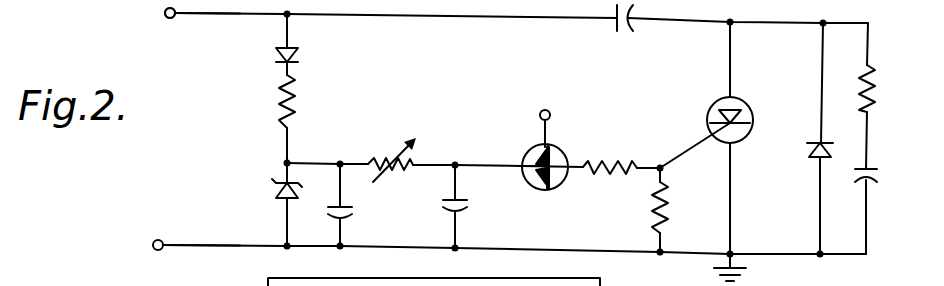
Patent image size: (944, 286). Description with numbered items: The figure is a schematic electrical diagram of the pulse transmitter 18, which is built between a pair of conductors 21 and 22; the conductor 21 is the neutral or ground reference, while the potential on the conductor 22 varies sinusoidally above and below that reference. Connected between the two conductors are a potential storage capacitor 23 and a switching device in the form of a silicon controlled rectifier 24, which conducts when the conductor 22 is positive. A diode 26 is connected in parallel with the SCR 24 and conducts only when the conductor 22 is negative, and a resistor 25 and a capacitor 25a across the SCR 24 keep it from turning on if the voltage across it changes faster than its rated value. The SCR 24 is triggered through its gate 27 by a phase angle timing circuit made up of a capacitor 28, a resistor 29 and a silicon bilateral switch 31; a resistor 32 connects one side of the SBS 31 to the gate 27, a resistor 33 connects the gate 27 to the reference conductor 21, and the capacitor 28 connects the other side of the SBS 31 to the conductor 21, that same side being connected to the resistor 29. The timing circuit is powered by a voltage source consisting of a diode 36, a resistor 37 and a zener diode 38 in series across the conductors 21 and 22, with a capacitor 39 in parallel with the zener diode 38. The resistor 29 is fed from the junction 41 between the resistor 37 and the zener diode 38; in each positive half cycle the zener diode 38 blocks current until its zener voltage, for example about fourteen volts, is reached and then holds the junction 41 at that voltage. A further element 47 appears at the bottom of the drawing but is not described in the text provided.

The pulse transmitter 18 is at (222, 128).
The conductor 21 is at (205, 242).
The conductor 22 is at (221, 16).
The capacitor 23 is at (613, 24).
The silicon controlled rectifier 24 is at (712, 98).
The resistor 25 is at (862, 80).
The capacitor 25a is at (860, 182).
The diode 26 is at (813, 157).
The gate 27 is at (716, 146).
The capacitor 28 is at (460, 212).
The resistor 29 is at (392, 146).
The silicon bilateral switch 31 is at (522, 152).
The resistor 32 is at (612, 180).
The resistor 33 is at (670, 216).
The diode 36 is at (297, 52).
The resistor 37 is at (296, 100).
The zener diode 38 is at (278, 186).
The capacitor 39 is at (345, 222).
The junction 41 is at (290, 161).
The housing 47 is at (152, 285).